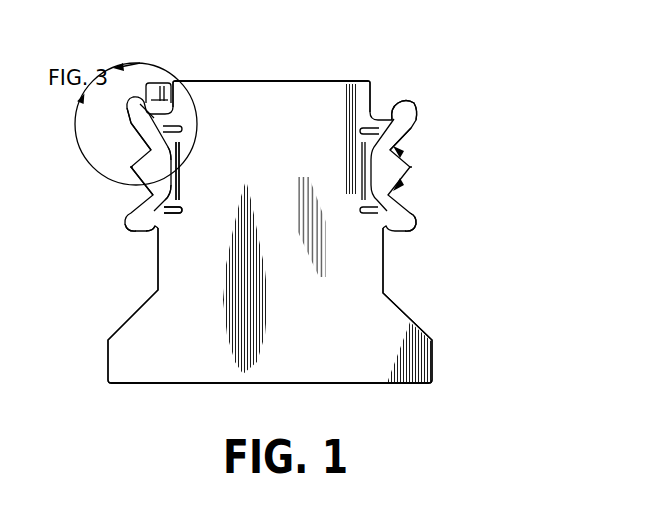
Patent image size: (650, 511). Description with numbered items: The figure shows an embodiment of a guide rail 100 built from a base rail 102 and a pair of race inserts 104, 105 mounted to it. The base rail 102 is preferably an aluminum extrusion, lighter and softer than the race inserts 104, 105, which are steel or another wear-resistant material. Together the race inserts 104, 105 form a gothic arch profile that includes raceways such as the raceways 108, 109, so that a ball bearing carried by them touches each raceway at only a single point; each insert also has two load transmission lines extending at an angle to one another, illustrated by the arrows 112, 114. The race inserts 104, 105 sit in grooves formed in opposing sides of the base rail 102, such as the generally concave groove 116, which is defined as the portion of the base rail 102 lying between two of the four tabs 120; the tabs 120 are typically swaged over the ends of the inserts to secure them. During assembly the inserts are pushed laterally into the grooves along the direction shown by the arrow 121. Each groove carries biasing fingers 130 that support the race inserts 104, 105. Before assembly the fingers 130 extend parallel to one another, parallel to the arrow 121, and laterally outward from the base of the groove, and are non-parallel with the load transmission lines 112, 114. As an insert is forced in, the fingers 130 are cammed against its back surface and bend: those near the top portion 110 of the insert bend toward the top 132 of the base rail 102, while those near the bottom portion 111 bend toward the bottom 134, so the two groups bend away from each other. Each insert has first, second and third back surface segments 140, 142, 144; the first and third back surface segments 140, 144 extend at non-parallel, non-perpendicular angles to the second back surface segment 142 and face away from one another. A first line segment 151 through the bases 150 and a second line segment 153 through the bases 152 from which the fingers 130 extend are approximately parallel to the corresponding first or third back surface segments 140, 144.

The guide rail 100 is at (422, 45).
The base rail 102 is at (337, 362).
The race insert 104 is at (150, 118).
The race insert 105 is at (399, 104).
The raceway 108 is at (128, 148).
The raceway 109 is at (137, 211).
The top portion of race insert 110 is at (414, 128).
The bottom portion of race insert 111 is at (412, 212).
The load transmission line 112 is at (405, 152).
The load transmission line 114 is at (405, 175).
The groove 116 is at (104, 182).
The tab 120 is at (128, 114).
The direction of insertion 121 is at (432, 172).
The biasing finger 130 is at (370, 82).
The top of base rail 132 is at (266, 81).
The bottom of base rail 134 is at (167, 384).
The first back surface segment 140 is at (157, 112).
The second back surface segment 142 is at (184, 176).
The third back surface segment 144 is at (152, 243).
The finger base 150 is at (197, 133).
The first line segment 151 is at (200, 152).
The finger base 152 is at (184, 209).
The second line segment 153 is at (200, 198).